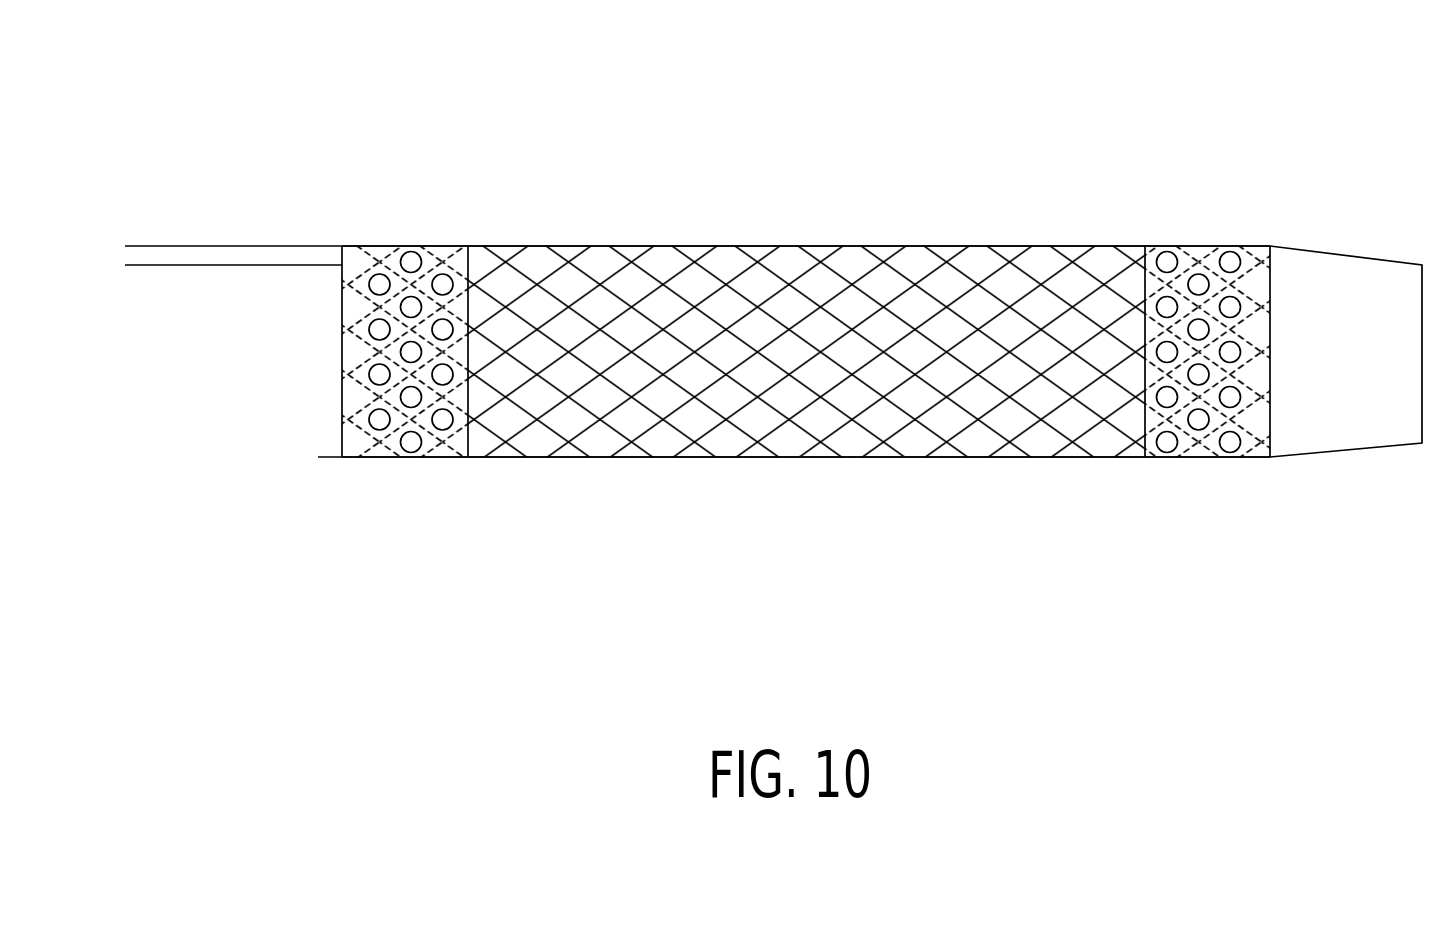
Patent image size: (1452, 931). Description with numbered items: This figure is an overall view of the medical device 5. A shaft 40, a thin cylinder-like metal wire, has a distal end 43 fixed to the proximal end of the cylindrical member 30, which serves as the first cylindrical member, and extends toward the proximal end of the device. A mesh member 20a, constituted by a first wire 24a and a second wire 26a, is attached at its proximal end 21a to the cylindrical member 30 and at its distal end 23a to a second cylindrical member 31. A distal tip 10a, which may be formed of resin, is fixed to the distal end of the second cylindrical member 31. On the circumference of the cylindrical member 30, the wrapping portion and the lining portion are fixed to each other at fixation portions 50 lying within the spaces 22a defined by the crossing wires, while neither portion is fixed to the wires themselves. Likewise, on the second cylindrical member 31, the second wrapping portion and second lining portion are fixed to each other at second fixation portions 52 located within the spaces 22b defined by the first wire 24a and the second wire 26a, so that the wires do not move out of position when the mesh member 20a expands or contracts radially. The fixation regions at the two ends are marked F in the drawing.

The medical device 5 is at (886, 116).
The shaft 40 is at (240, 245).
The distal end of the shaft 43 is at (342, 245).
The proximal end of the mesh member 21a is at (341, 458).
The first wire 24a is at (787, 261).
The spaces 22a is at (373, 405).
The fixation portions 50 is at (369, 330).
The cylindrical member 30 is at (462, 459).
The mesh member 20a is at (927, 246).
The second wire 26a is at (833, 428).
The second cylindrical member 31 is at (1146, 450).
The spaces 22b is at (1263, 379).
The fixing region F is at (1198, 246).
The second fixation portions 52 is at (1234, 302).
The distal end of the mesh member 23a is at (1271, 458).
The distal tip 10a is at (1358, 251).